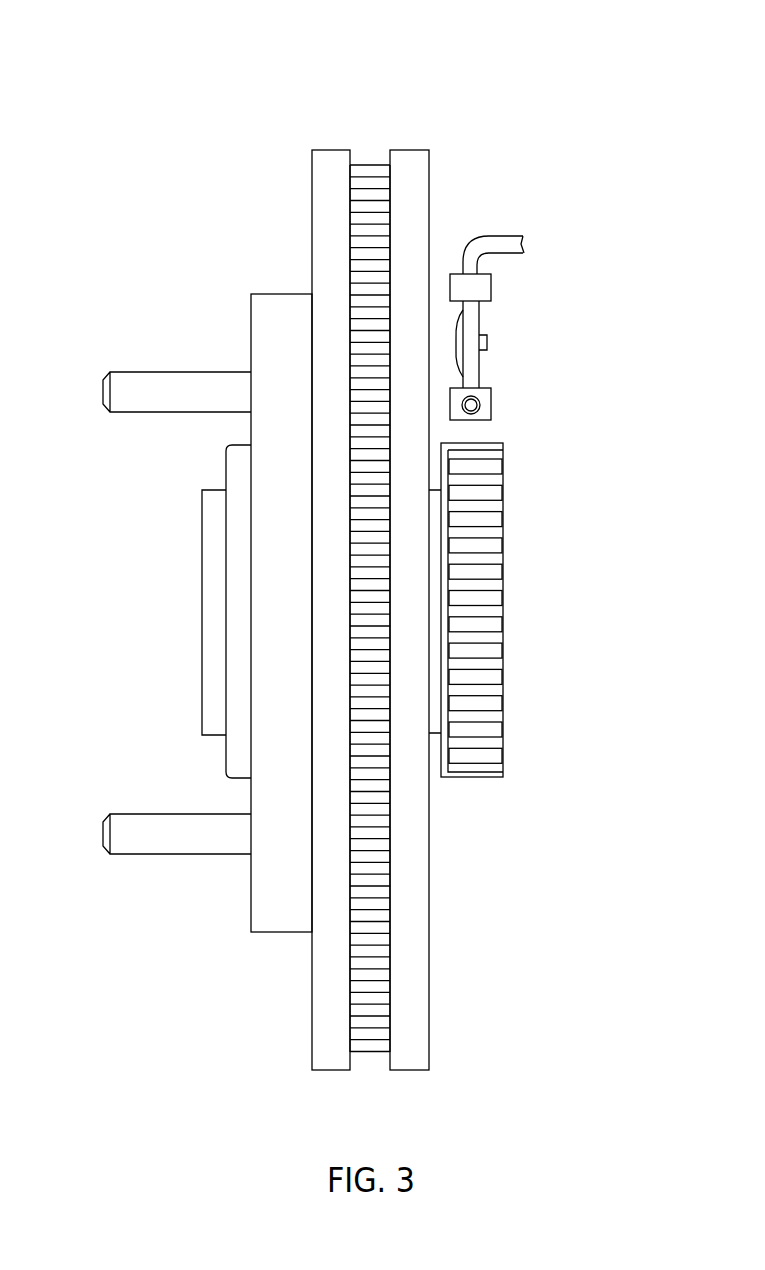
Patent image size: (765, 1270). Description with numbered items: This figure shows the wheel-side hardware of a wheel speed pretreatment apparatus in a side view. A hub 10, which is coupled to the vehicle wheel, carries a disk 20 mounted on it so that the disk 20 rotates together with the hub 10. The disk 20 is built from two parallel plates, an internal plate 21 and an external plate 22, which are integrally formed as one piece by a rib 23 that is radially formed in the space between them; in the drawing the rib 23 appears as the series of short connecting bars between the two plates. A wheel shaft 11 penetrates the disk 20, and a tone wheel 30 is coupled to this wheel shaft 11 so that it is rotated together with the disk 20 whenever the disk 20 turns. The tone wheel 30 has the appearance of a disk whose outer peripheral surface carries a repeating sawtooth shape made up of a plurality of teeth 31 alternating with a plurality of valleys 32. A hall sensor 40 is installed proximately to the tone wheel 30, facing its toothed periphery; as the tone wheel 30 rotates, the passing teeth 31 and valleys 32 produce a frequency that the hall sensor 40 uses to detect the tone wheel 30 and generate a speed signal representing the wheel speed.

The hub 10 is at (271, 304).
The wheel shaft 11 is at (432, 713).
The disk 20 is at (418, 54).
The internal plate 21 is at (408, 161).
The external plate 22 is at (332, 164).
The rib 23 is at (370, 174).
The tone wheel 30 is at (542, 598).
The teeth 31 is at (497, 556).
The valleys 32 is at (497, 597).
The hall sensor 40 is at (507, 388).